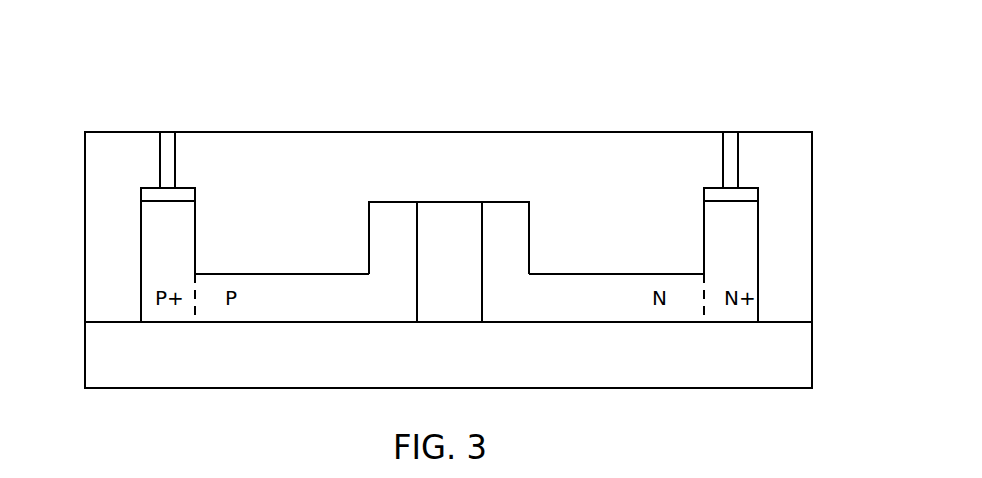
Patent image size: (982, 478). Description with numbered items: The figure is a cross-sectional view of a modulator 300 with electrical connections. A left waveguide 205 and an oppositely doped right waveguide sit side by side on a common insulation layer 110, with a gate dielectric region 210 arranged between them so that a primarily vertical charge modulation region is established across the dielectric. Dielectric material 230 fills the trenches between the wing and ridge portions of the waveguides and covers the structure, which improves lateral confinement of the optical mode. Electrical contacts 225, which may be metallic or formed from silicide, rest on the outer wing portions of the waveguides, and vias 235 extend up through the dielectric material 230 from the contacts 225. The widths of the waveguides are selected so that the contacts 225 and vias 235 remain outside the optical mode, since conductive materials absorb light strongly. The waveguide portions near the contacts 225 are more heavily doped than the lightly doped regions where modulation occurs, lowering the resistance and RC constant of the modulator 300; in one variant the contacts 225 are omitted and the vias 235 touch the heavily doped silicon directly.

The modulator 300 is at (653, 82).
The insulation layer 110 is at (780, 364).
The dielectric material 230 is at (260, 168).
The left waveguide 205 is at (303, 273).
The gate dielectric region 210 is at (430, 202).
The electrical contacts 225 is at (140, 196).
The vias 235 is at (160, 157).